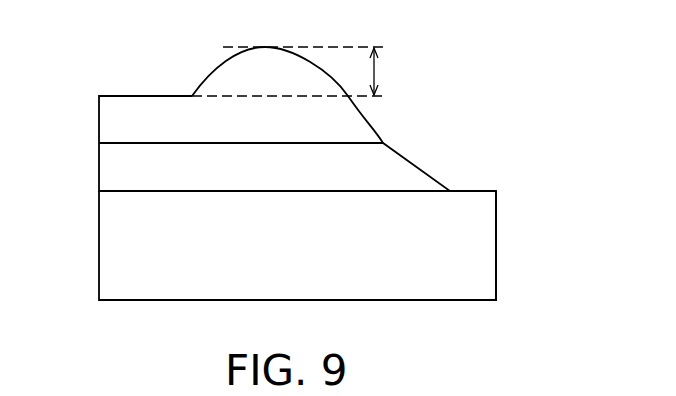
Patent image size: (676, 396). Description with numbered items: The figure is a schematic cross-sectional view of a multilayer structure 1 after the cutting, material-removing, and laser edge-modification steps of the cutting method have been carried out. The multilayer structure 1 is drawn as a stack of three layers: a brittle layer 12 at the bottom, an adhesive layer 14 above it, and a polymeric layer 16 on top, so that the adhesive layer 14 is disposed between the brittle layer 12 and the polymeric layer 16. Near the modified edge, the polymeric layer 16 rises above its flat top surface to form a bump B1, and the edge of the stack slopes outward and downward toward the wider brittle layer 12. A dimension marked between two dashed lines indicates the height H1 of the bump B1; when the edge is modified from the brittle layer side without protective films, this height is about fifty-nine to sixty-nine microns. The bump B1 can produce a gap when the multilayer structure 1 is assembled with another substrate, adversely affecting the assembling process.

The multilayer structure 1 is at (562, 330).
The brittle layer 12 is at (108, 254).
The adhesive layer 14 is at (108, 169).
The polymeric layer 16 is at (108, 124).
The bump B1 is at (309, 76).
The height of the bump H1 is at (302, 71).